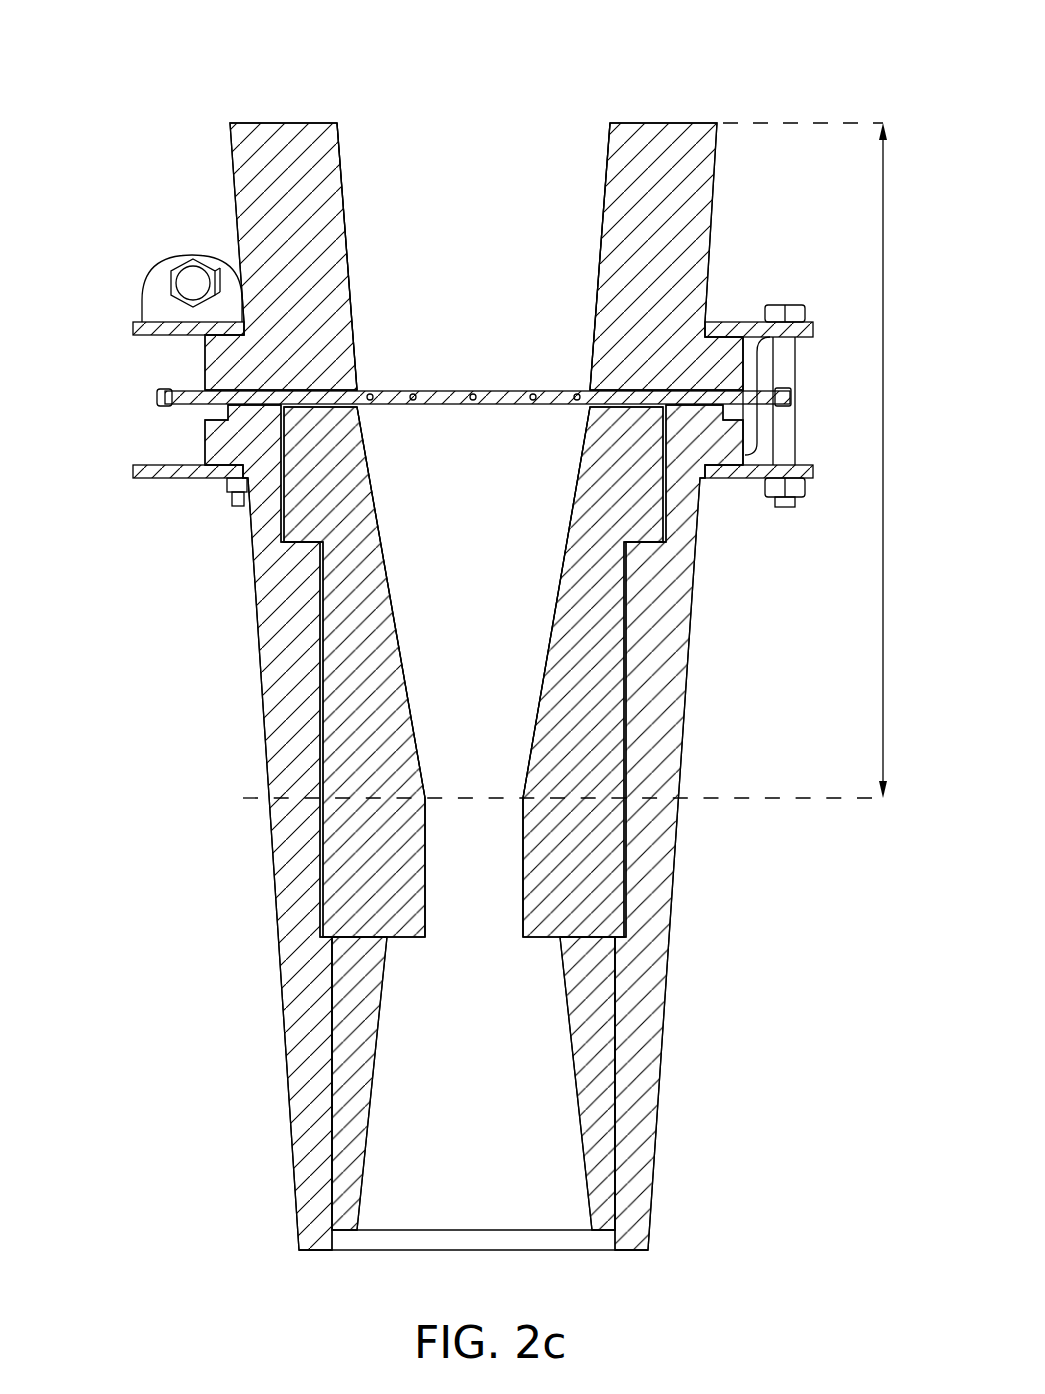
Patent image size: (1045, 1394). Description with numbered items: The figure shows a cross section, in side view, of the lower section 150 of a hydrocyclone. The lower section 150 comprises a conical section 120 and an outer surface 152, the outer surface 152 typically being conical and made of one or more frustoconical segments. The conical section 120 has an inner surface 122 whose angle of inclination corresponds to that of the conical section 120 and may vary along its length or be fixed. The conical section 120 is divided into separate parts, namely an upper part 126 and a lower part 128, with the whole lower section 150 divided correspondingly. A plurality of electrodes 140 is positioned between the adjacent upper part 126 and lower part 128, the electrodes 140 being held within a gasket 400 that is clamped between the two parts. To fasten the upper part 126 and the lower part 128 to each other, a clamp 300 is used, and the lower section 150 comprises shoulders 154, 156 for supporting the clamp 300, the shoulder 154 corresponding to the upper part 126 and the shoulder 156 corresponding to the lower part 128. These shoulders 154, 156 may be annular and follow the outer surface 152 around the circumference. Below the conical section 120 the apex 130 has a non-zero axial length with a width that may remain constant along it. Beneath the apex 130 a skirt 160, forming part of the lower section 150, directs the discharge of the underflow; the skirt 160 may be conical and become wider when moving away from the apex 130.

The lower section 150 is at (770, 96).
The conical section 120 is at (605, 210).
The inner surface 122 is at (474, 256).
The electrodes 140 is at (369, 388).
The upper part 126 is at (333, 223).
The shoulder 154 is at (203, 363).
The shoulder 156 is at (203, 443).
The gasket 400 is at (447, 390).
The clamp 300 is at (733, 322).
The outer surface 152 is at (273, 917).
The lower part 128 is at (387, 643).
The apex 130 is at (500, 848).
The skirt 160 is at (370, 1063).